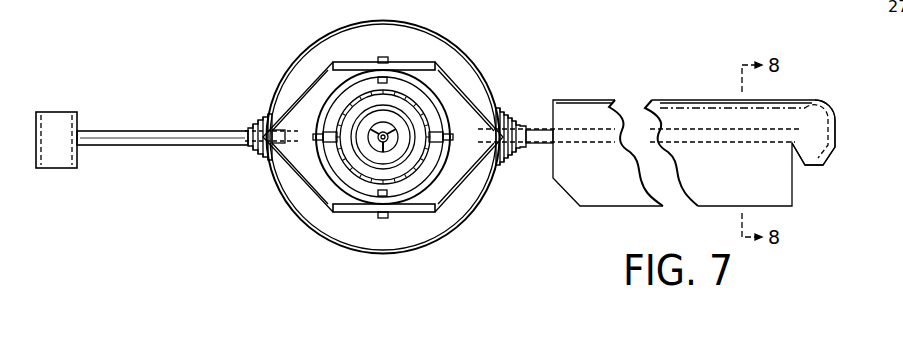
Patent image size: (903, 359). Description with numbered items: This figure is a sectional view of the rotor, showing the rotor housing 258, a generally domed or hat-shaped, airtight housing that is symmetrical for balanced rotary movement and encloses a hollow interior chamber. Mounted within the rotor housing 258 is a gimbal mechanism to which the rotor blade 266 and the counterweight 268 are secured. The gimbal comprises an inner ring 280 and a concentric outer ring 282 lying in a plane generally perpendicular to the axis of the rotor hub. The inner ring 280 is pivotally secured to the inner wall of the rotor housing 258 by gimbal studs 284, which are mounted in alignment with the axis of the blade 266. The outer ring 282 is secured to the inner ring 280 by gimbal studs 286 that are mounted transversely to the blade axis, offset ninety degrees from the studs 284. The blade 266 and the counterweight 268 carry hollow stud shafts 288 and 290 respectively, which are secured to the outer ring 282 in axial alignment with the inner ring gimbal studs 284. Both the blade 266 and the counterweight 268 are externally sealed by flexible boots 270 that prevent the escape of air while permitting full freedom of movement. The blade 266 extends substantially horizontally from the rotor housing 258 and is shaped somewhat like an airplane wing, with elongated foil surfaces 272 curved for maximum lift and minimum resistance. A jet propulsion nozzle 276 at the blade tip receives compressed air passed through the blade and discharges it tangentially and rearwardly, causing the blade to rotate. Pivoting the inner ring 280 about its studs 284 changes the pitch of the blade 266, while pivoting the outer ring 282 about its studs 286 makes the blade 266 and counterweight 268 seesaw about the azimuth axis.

The counterweight 268 is at (60, 112).
The flexible boots 270 is at (262, 116).
The hollow stud shaft 290 is at (278, 168).
The gimbal studs 284 is at (313, 141).
The gimbal studs 286 is at (385, 58).
The rotor housing 258 is at (404, 198).
The inner ring 280 is at (448, 162).
The outer ring 282 is at (455, 191).
The hollow stud shaft 288 is at (502, 117).
The foil surfaces 272 is at (582, 193).
The rotor blade 266 is at (790, 194).
The jet propulsion nozzle 276 is at (830, 162).